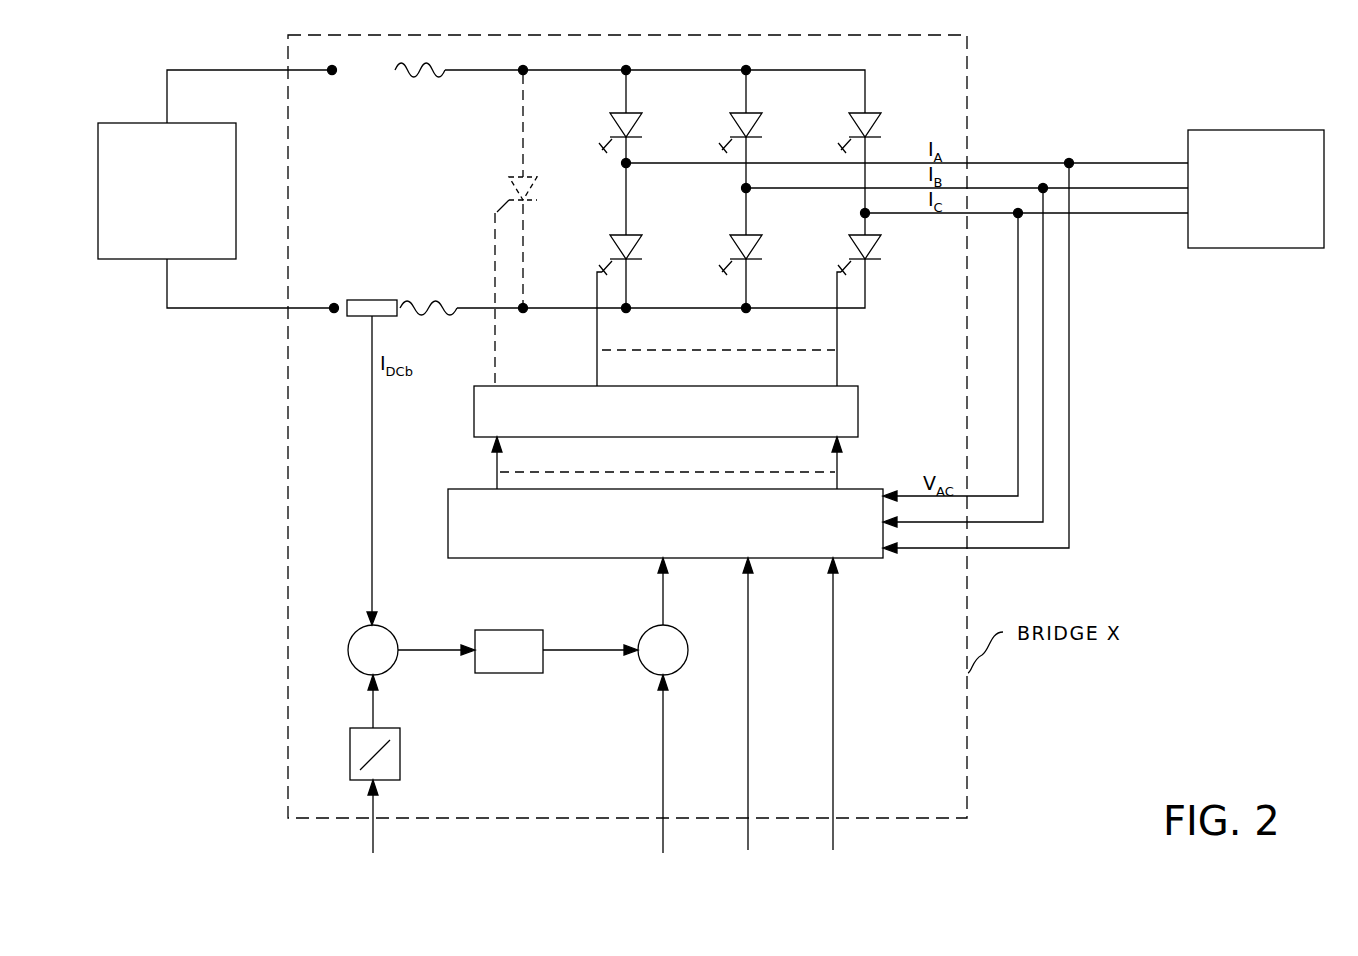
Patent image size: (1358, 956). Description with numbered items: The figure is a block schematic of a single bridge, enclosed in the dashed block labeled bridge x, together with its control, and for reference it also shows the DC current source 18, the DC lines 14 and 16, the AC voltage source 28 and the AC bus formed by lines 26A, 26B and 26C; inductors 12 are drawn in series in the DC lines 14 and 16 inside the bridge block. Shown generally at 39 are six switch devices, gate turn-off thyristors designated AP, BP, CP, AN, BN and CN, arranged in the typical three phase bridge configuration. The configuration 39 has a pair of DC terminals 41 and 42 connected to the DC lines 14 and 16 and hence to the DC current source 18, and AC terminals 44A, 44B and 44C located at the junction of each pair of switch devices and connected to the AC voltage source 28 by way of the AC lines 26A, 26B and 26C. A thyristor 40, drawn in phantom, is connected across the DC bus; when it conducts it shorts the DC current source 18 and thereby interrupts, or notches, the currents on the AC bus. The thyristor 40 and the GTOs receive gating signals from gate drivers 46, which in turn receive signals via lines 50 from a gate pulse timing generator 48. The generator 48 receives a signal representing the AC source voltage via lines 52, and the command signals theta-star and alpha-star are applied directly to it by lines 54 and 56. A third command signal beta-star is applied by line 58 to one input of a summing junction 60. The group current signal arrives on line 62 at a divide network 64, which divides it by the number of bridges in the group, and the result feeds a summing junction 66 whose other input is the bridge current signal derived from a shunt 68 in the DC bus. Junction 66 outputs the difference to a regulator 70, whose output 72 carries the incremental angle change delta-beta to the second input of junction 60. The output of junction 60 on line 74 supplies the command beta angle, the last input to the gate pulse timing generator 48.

The smoothing inductor 12 is at (425, 78).
The DC line 14 is at (196, 70).
The DC line 16 is at (238, 308).
The DC current source 18 is at (136, 123).
The AC line 26A is at (1005, 163).
The AC line 26B is at (1015, 188).
The AC line 26C is at (1088, 213).
The AC voltage source 28 is at (1272, 249).
The switch device configuration 39 is at (711, 95).
The thyristor 40 is at (511, 178).
The DC terminal 41 is at (332, 76).
The DC terminal 42 is at (334, 303).
The AC terminal 44A is at (622, 164).
The AC terminal 44B is at (743, 188).
The AC terminal 44C is at (863, 214).
The gate drivers 46 is at (859, 420).
The gate pulse timing generator 48 is at (866, 559).
The lines 50 is at (838, 472).
The lines 52 is at (1018, 401).
The line 54 is at (835, 756).
The line 56 is at (750, 763).
The line 58 is at (665, 763).
The summing junction 60 is at (687, 638).
The line 62 is at (375, 838).
The divide network 64 is at (401, 765).
The summing junction 66 is at (356, 632).
The shunt 68 is at (360, 317).
The regulator 70 is at (502, 630).
The regulator output 72 is at (569, 652).
The line 74 is at (665, 612).